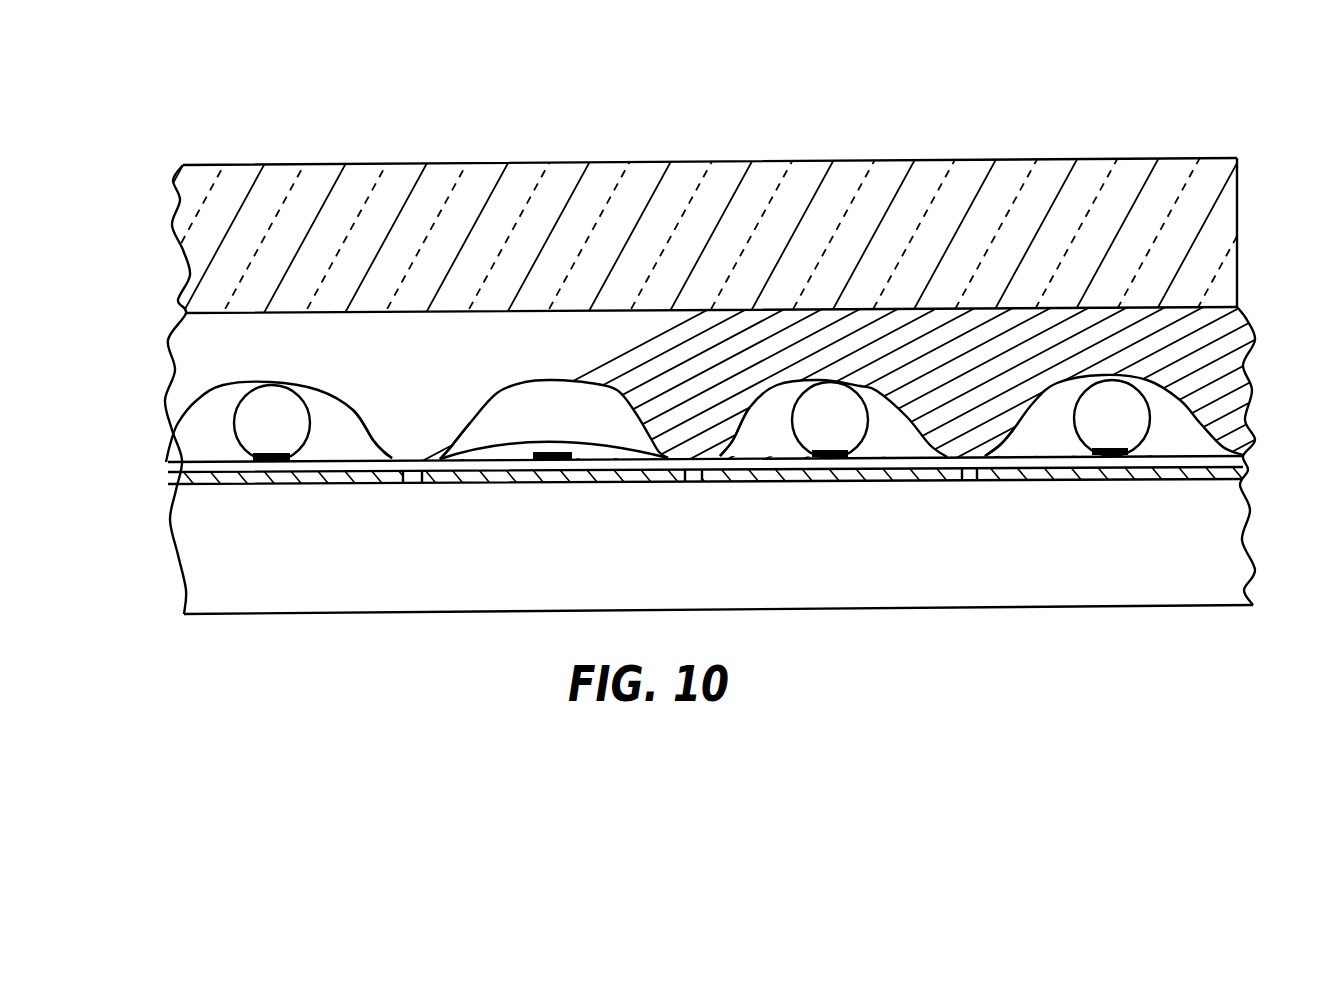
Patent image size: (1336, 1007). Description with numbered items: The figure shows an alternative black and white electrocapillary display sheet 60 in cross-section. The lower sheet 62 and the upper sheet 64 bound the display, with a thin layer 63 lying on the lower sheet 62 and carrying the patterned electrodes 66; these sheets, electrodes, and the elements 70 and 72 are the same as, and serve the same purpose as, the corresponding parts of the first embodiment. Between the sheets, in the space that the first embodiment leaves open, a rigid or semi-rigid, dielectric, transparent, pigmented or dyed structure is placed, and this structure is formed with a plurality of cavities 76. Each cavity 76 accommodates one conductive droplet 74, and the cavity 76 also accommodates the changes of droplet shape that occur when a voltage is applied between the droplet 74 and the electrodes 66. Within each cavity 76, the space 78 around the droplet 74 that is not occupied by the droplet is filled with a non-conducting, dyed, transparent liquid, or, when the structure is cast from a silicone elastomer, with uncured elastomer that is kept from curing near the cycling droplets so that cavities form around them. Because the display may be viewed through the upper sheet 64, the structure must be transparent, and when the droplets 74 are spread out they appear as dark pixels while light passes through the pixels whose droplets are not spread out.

The light emitting device assembly 60 is at (1117, 122).
The sheet 62 is at (1220, 528).
The thin layer on substrate 63 is at (1227, 462).
The sheet 64 is at (1210, 205).
The electrodes 66 is at (223, 480).
The element corresponding to element 20 of FIG. 1 70 is at (280, 453).
The element corresponding to element 22 of FIG. 1 72 is at (1218, 318).
The droplet 74 is at (297, 400).
The cavity 76 is at (360, 447).
The space 78 is at (203, 437).